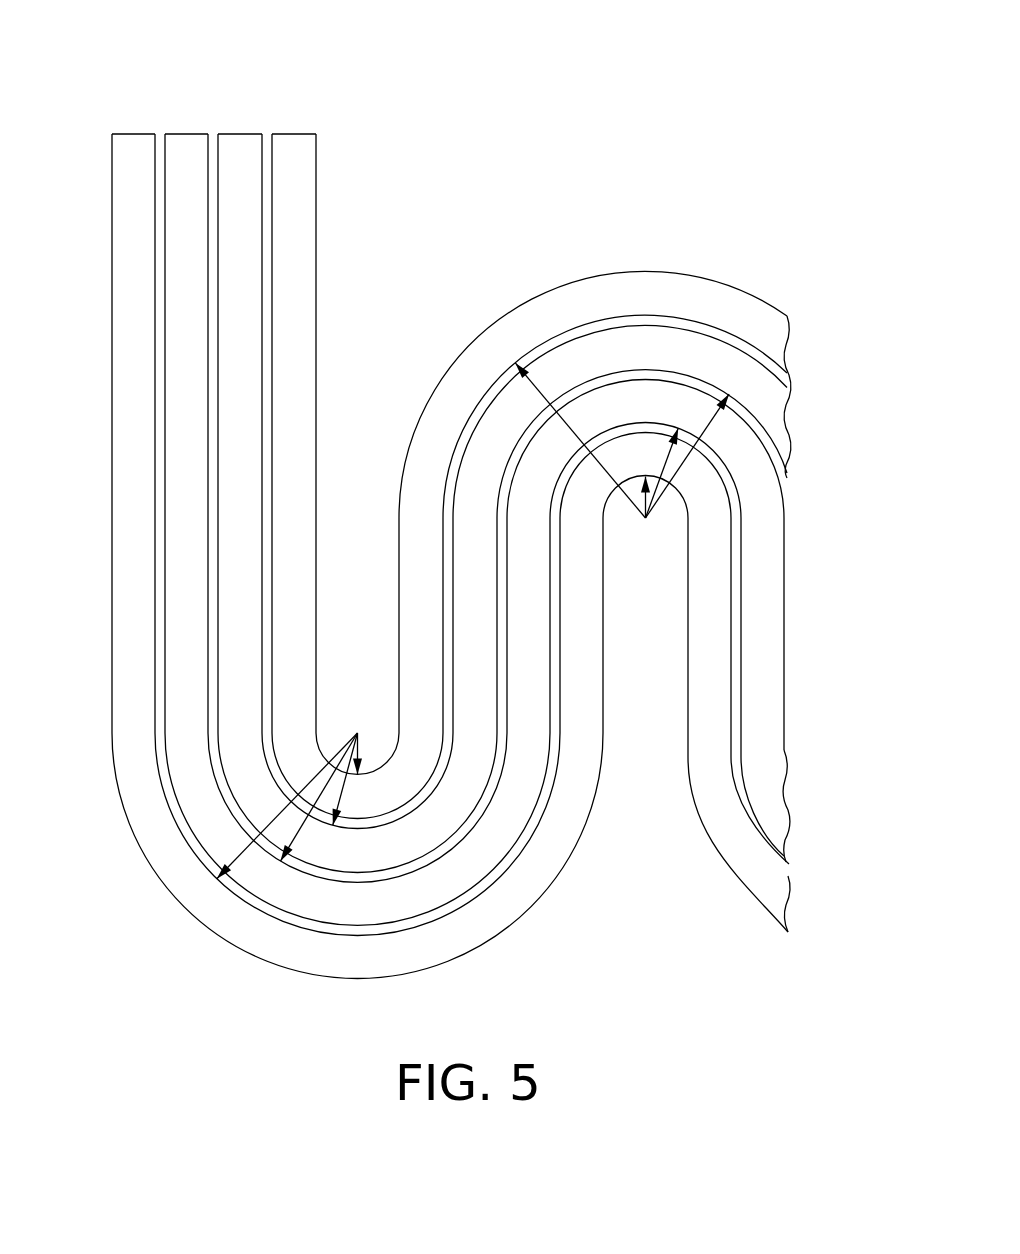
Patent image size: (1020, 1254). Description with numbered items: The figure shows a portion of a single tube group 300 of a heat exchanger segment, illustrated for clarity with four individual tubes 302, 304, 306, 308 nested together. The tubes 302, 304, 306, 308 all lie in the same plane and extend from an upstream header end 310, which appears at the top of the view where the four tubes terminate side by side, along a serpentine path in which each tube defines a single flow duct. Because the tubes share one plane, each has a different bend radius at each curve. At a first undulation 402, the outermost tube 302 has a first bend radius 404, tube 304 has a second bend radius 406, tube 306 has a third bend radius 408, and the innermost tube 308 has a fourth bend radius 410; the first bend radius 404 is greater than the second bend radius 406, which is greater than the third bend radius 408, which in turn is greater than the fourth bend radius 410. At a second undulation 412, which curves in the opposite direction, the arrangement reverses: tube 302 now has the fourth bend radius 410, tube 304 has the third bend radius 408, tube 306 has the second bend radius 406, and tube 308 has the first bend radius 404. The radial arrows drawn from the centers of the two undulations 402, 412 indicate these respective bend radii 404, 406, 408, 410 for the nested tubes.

The tube group 300 is at (570, 188).
The tube 302 is at (133, 133).
The tube 304 is at (187, 133).
The tube 306 is at (240, 133).
The tube 308 is at (295, 133).
The upstream header end 310 is at (162, 57).
The first undulation 402 is at (252, 982).
The first bend radius 404 is at (333, 763).
The second bend radius 406 is at (307, 823).
The third bend radius 408 is at (348, 792).
The fourth bend radius 410 is at (363, 750).
The second undulation 412 is at (703, 270).